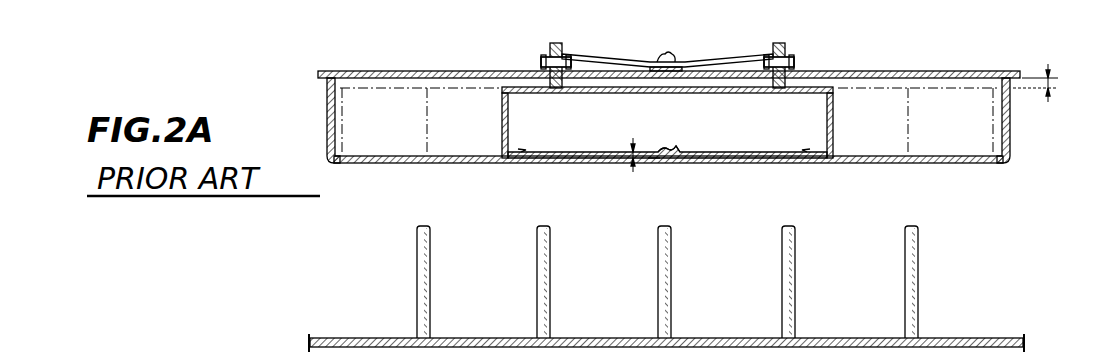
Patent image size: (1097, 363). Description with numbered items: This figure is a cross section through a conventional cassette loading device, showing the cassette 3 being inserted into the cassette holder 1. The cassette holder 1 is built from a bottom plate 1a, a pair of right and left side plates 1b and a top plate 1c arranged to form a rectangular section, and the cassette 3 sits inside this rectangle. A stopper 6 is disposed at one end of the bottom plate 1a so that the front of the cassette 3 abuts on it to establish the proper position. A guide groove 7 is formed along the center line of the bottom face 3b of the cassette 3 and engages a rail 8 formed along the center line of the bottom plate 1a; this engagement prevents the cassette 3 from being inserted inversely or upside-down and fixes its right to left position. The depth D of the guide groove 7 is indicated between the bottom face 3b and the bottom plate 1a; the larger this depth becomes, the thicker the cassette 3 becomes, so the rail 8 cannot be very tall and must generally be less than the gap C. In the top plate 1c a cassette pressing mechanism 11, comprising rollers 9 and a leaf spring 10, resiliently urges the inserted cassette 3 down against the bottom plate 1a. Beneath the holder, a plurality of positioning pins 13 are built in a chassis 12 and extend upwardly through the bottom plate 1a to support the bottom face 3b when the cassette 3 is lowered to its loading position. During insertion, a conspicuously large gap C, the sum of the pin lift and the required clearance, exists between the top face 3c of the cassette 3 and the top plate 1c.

The cassette holder 1 is at (668, 114).
The bottom plate 1a is at (856, 163).
The side plates 1b is at (327, 120).
The top plate 1c is at (447, 72).
The cassette 3 is at (687, 116).
The bottom face 3b is at (762, 158).
The top face 3c is at (815, 87).
The stopper 6 is at (520, 150).
The guide groove 7 is at (668, 150).
The rail 8 is at (655, 160).
The rollers 9 is at (548, 45).
The leaf spring 10 is at (590, 56).
The cassette pressing mechanism 11 is at (695, 48).
The chassis 12 is at (357, 338).
The positioning pins 13 is at (424, 262).
The gap C is at (1050, 66).
The depth D is at (630, 150).